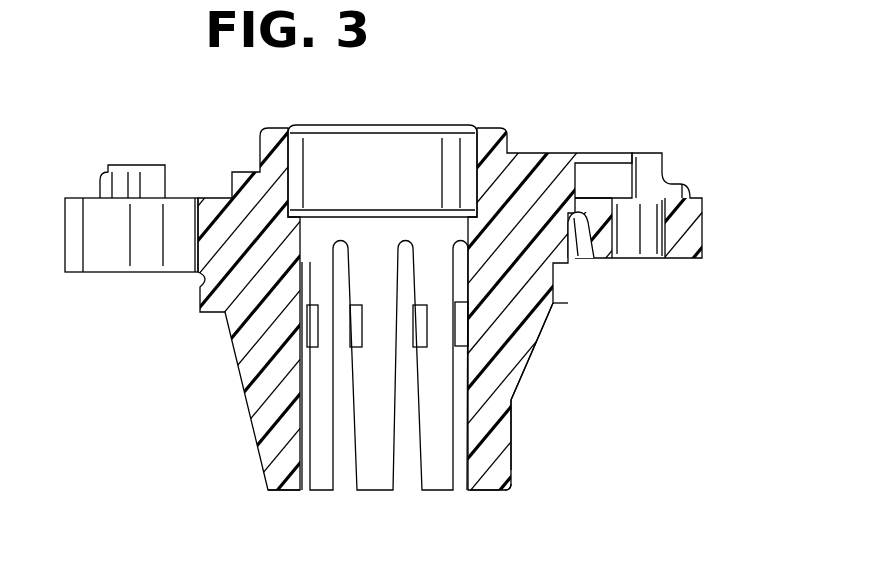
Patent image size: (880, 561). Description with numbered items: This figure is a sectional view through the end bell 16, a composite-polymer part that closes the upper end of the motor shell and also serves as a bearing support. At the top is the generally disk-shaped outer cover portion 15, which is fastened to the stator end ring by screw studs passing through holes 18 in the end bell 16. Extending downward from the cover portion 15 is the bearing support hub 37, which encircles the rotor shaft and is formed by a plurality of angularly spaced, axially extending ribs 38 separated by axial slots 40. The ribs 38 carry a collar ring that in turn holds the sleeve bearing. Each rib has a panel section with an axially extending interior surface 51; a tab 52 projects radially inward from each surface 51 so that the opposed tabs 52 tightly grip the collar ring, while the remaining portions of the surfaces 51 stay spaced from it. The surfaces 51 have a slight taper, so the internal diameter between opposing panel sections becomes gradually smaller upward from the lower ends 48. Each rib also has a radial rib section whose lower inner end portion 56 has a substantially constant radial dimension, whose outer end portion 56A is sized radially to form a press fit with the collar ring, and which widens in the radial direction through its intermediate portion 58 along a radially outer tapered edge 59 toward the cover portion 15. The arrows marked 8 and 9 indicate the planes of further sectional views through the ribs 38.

The gap 8 is at (357, 437).
The gap 9 is at (360, 271).
The outer cover portion 15 is at (212, 198).
The end bell 16 is at (203, 360).
The holes 18 is at (635, 227).
The bearing support hub 37 is at (514, 442).
The ribs 38 is at (370, 477).
The axial slots 40 is at (405, 383).
The ends 48 is at (483, 473).
The interior surface 51 is at (303, 440).
The tab 52 is at (400, 310).
The lower inner end portion 56 is at (509, 490).
The outer end portion 56A is at (513, 462).
The intermediate portion 58 is at (515, 377).
The radially outer tapered edge 59 is at (553, 337).